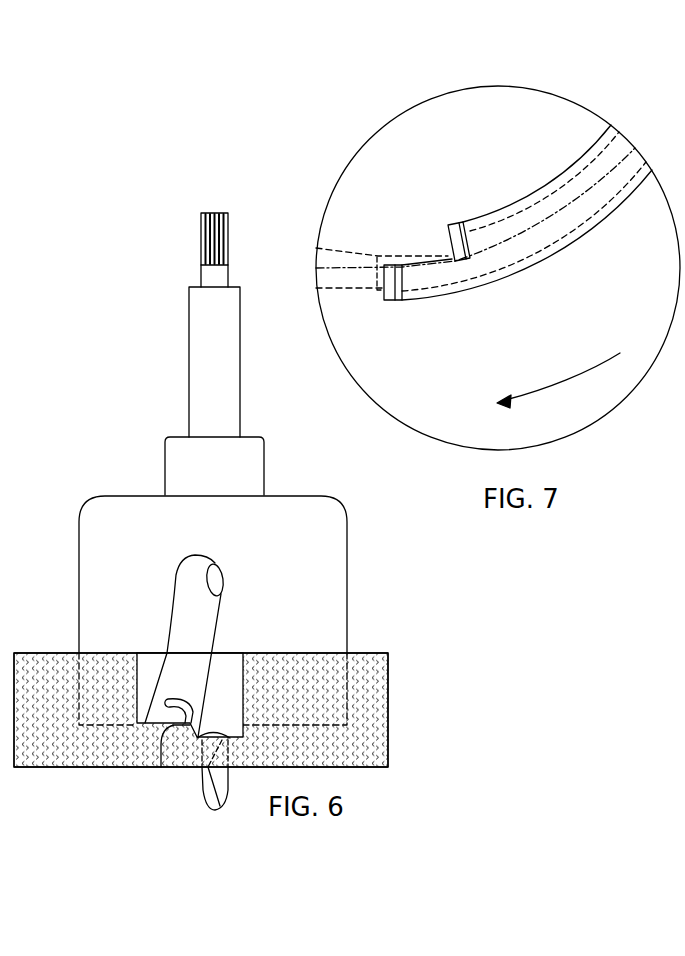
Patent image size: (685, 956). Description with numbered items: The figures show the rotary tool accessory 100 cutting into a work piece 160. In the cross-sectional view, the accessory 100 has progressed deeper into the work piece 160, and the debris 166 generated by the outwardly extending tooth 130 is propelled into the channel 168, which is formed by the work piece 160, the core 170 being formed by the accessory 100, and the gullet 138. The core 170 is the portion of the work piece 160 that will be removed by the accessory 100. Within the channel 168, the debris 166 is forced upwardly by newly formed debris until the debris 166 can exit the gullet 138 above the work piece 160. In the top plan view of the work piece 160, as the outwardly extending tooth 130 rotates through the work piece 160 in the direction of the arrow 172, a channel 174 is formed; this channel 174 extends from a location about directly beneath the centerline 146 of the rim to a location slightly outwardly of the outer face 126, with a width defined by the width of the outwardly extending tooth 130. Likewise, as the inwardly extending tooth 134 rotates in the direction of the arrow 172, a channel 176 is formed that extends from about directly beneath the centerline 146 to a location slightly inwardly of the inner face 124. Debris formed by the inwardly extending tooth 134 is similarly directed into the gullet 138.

In FIG. 6, the rotary tool accessory 100 is at (129, 389).
In FIG. 6, the work piece 160 is at (360, 652).
In FIG. 7, the work piece 160 is at (572, 347).
In FIG. 6, the core 170 is at (193, 652).
In FIG. 6, the channel 168 is at (206, 672).
In FIG. 6, the gullet 138 is at (215, 563).
In FIG. 7, the gullet 138 is at (377, 257).
In FIG. 6, the debris 166 is at (170, 699).
In FIG. 6, the outwardly extending tooth 130 is at (161, 767).
In FIG. 7, the outwardly extending tooth 130 is at (385, 300).
In FIG. 7, the inner face 124 is at (590, 157).
In FIG. 7, the outer face 126 is at (620, 203).
In FIG. 7, the centerline 146 is at (619, 163).
In FIG. 7, the channel 176 is at (510, 207).
In FIG. 7, the channel 174 is at (428, 300).
In FIG. 7, the inwardly extending tooth 134 is at (453, 225).
In FIG. 7, the arrow 172 is at (587, 375).